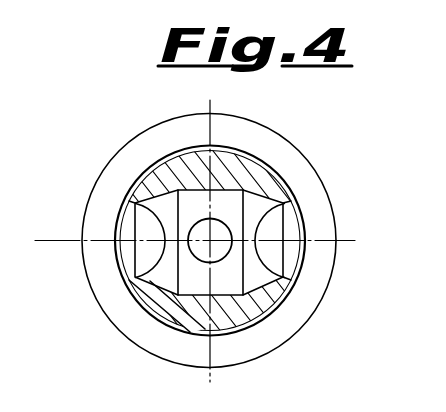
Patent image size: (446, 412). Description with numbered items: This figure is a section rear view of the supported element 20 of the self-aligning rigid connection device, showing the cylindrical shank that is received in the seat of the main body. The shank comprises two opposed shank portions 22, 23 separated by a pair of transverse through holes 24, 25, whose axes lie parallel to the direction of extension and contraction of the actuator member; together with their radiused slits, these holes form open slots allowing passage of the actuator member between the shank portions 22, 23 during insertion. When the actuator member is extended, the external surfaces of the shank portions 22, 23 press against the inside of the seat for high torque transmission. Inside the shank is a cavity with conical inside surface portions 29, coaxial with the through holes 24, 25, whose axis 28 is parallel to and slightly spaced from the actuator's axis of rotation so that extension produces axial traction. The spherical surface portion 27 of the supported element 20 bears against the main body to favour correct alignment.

The supported element 20 is at (125, 132).
The shank portion 22 is at (246, 167).
The shank portion 23 is at (250, 320).
The transverse through hole 24 is at (288, 215).
The transverse through hole 25 is at (128, 212).
The spherical surface portion 27 is at (125, 304).
The axis 28 is at (50, 240).
The conical inside surface portions 29 is at (148, 228).